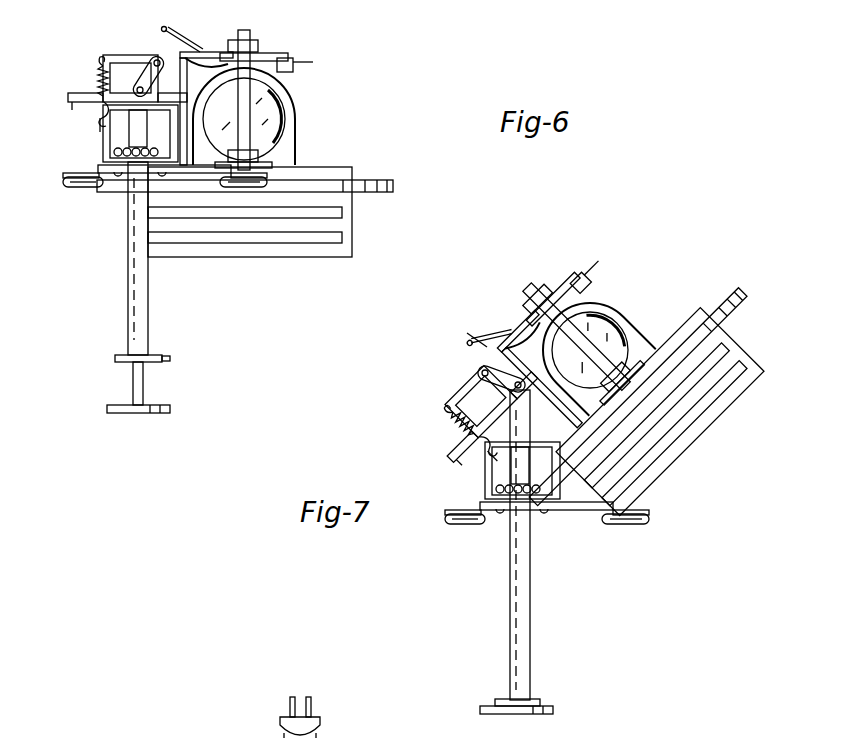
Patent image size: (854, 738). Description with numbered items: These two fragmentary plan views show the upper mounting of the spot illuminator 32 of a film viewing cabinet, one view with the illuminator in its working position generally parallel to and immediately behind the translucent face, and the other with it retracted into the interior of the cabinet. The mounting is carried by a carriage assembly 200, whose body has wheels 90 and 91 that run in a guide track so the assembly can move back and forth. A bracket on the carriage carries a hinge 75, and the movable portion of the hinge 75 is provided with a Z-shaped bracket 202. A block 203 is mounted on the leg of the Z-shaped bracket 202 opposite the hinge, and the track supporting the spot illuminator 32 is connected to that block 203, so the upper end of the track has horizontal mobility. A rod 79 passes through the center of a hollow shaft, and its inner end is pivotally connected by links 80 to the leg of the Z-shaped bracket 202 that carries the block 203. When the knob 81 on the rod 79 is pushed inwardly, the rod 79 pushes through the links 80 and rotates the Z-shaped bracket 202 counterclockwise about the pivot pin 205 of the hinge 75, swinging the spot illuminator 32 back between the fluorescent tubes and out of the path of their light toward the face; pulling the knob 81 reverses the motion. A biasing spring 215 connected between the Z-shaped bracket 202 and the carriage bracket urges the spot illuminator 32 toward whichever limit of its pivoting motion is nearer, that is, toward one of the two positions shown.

In FIG. 6, the spot illuminator 32 is at (302, 105).
In FIG. 7, the spot illuminator 32 is at (620, 294).
In FIG. 6, the hinge 75 is at (72, 110).
In FIG. 7, the hinge 75 is at (462, 465).
In FIG. 6, the rod 79 is at (143, 383).
In FIG. 7, the rod 79 is at (478, 380).
In FIG. 6, the links 80 is at (150, 55).
In FIG. 7, the links 80 is at (488, 370).
In FIG. 6, the knob 81 is at (147, 413).
In FIG. 7, the knob 81 is at (528, 714).
In FIG. 6, the wheel 90 is at (88, 188).
In FIG. 7, the wheel 90 is at (452, 528).
In FIG. 6, the wheel 91 is at (254, 188).
In FIG. 7, the wheel 91 is at (632, 528).
In FIG. 6, the carriage assembly 200 is at (120, 208).
In FIG. 7, the carriage assembly 200 is at (542, 537).
In FIG. 6, the Z-shaped bracket 202 is at (98, 61).
In FIG. 7, the Z-shaped bracket 202 is at (453, 412).
In FIG. 6, the block 203 is at (178, 66).
In FIG. 7, the block 203 is at (462, 402).
In FIG. 6, the pivot pin 205 is at (100, 130).
In FIG. 7, the pivot pin 205 is at (482, 462).
In FIG. 6, the biasing spring 215 is at (96, 80).
In FIG. 7, the biasing spring 215 is at (456, 426).